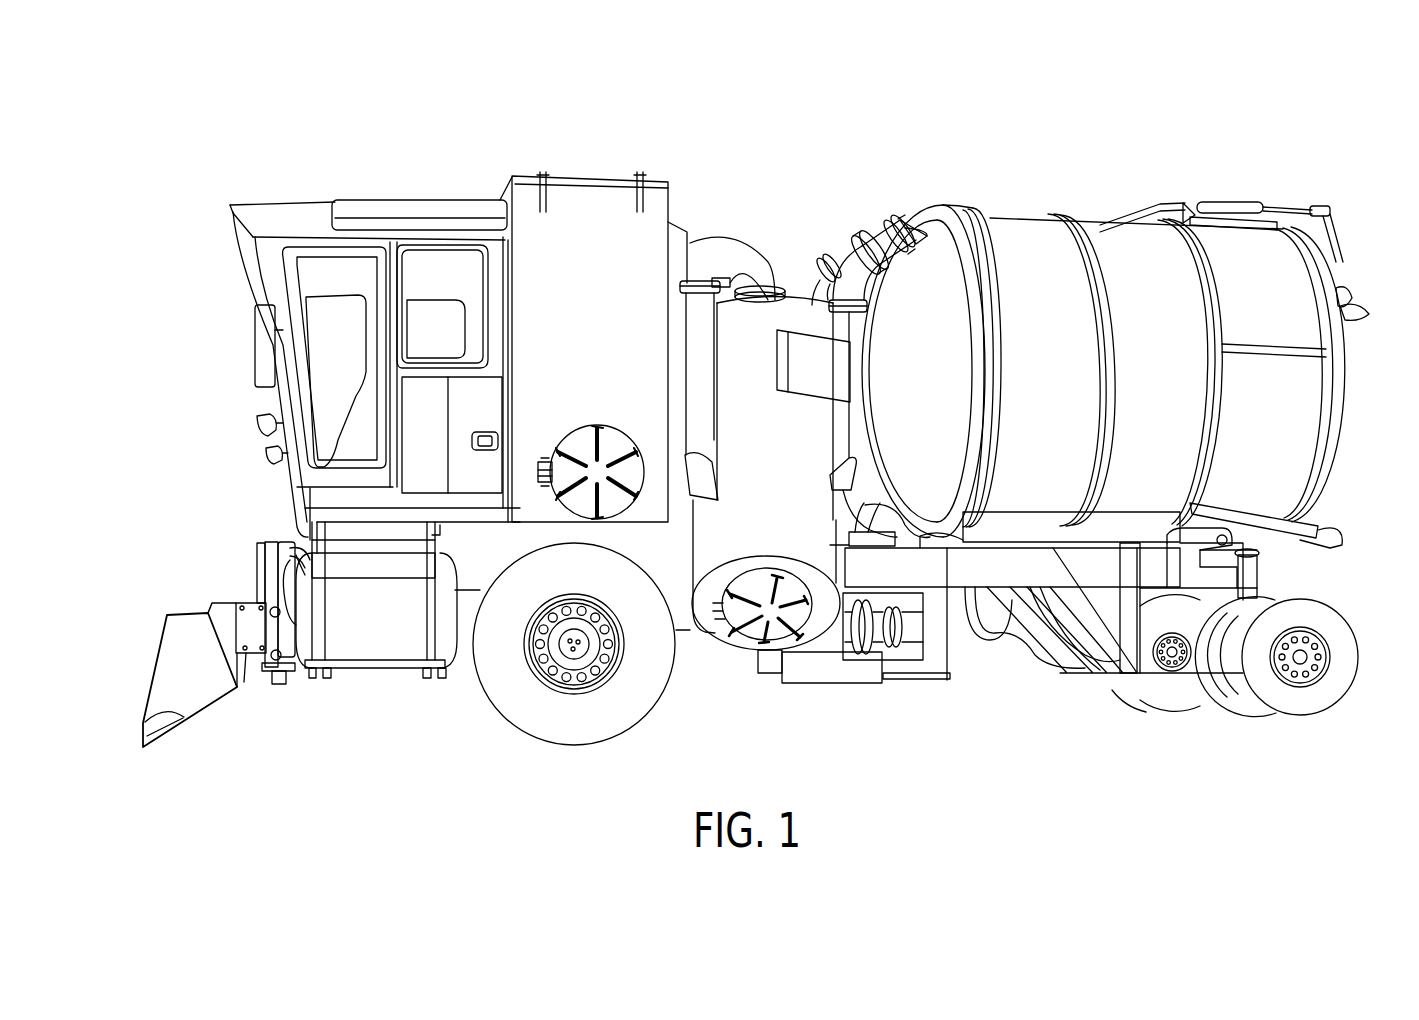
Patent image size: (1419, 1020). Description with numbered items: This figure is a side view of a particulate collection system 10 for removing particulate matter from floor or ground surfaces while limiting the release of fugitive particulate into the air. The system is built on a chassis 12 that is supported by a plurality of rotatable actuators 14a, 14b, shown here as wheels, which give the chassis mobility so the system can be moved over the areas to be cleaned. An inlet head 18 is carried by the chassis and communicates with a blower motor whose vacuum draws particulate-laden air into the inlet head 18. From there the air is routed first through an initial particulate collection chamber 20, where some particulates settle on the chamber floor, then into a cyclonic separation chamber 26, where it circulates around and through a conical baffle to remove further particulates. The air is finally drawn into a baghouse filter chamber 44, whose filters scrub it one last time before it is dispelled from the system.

The particulate collection system 10 is at (224, 136).
The chassis 12 is at (990, 605).
The rotatable actuator 14a is at (1276, 735).
The rotatable actuator 14b is at (574, 768).
The inlet head 18 is at (163, 657).
The initial particulate collection chamber 20 is at (1005, 218).
The cyclonic separation chamber 26 is at (795, 300).
The baghouse filter chamber 44 is at (585, 198).